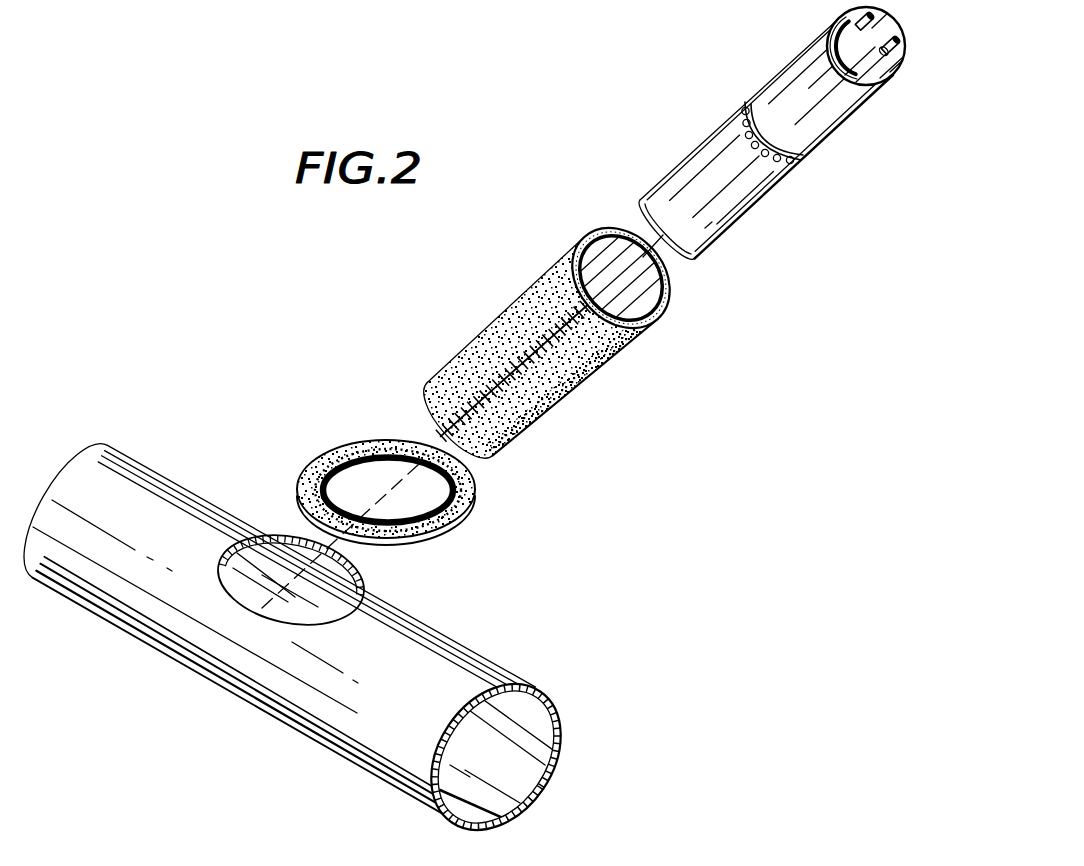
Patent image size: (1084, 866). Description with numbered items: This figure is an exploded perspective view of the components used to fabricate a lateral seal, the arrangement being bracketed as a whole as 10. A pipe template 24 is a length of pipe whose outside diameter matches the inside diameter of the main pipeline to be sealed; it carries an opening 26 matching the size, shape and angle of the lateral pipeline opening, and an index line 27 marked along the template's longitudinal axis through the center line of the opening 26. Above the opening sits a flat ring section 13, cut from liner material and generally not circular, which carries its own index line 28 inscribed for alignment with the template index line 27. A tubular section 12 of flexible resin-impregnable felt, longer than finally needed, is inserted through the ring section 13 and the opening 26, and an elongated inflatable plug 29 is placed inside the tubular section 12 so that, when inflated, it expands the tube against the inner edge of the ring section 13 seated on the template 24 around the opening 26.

The disinfecting device assembly 10 is at (902, 85).
The tubular section 12 is at (600, 392).
The ring section 13 is at (418, 468).
The pipe template 24 is at (305, 622).
The opening 26 is at (312, 610).
The index line 27 is at (190, 503).
The index line 28 is at (322, 464).
The inflatable plug 29 is at (702, 177).